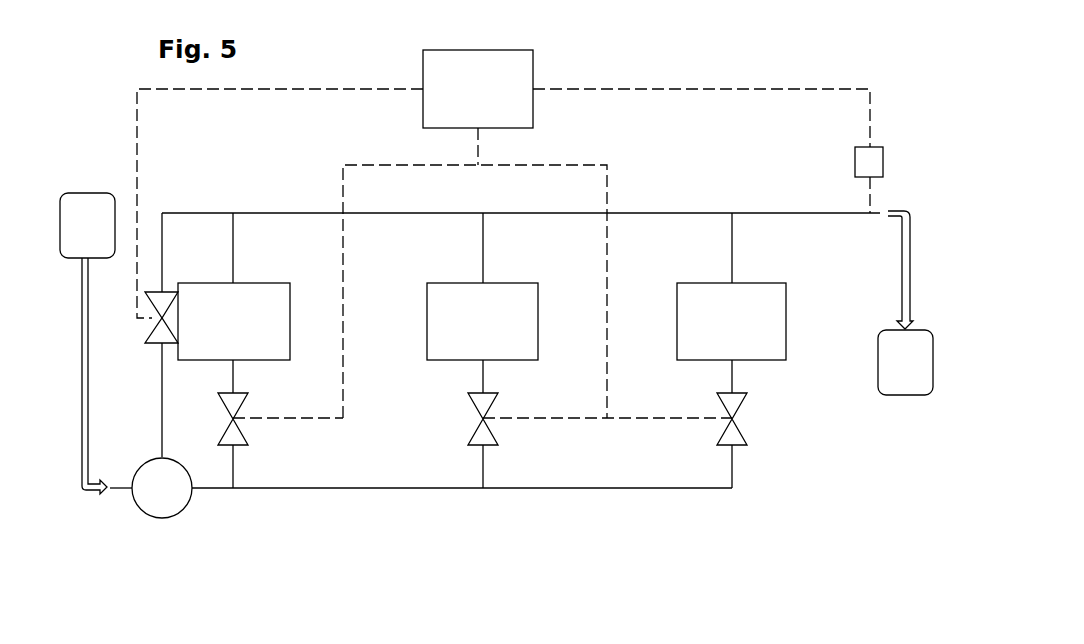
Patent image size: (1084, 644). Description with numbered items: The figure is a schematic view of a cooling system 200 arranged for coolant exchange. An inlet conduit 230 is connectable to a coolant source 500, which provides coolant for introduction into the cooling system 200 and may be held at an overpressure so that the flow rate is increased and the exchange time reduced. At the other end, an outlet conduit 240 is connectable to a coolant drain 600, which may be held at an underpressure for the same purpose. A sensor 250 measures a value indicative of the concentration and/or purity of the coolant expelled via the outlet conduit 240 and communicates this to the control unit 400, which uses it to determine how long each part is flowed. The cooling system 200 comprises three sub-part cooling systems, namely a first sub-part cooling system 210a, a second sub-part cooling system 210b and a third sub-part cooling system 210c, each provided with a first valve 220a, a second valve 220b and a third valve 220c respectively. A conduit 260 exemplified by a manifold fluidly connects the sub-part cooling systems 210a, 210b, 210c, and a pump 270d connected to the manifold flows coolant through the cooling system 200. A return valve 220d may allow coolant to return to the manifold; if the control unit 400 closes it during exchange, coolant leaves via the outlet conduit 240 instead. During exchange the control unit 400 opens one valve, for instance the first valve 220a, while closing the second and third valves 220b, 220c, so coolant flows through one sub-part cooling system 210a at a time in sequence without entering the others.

The cooling system 200 is at (313, 52).
The control unit 400 is at (478, 89).
The coolant source 500 is at (87, 343).
The coolant drain 600 is at (905, 303).
The outlet conduit 240 is at (845, 213).
The sensor 250 is at (853, 162).
The first sub-part cooling system 210a is at (234, 303).
The second sub-part cooling system 210b is at (482, 303).
The third sub-part cooling system 210c is at (731, 303).
The first valve 220a is at (238, 437).
The second valve 220b is at (487, 437).
The third valve 220c is at (735, 437).
The return valve 220d is at (147, 290).
The pump 270d is at (172, 492).
The inlet conduit 230 is at (118, 489).
The conduit 260 is at (455, 492).